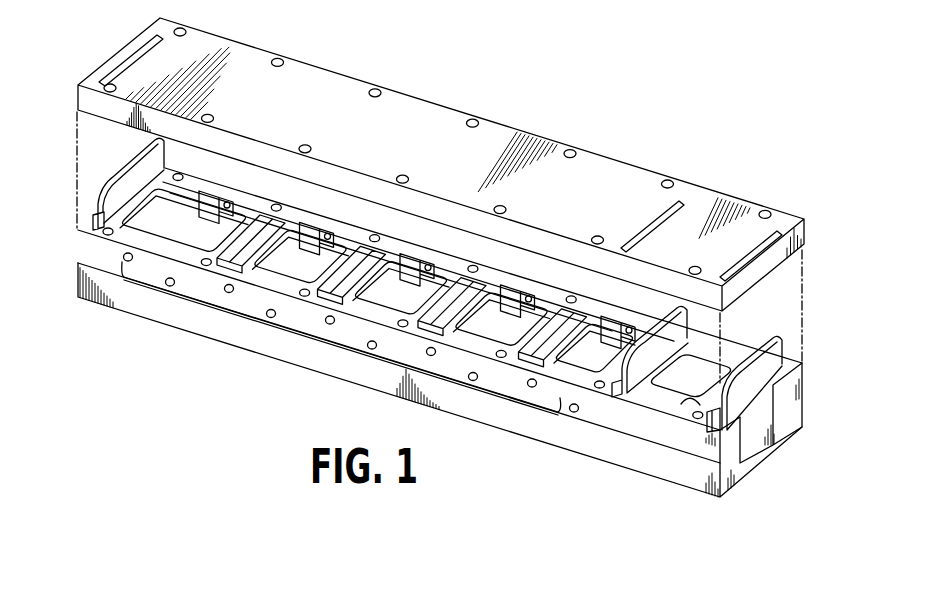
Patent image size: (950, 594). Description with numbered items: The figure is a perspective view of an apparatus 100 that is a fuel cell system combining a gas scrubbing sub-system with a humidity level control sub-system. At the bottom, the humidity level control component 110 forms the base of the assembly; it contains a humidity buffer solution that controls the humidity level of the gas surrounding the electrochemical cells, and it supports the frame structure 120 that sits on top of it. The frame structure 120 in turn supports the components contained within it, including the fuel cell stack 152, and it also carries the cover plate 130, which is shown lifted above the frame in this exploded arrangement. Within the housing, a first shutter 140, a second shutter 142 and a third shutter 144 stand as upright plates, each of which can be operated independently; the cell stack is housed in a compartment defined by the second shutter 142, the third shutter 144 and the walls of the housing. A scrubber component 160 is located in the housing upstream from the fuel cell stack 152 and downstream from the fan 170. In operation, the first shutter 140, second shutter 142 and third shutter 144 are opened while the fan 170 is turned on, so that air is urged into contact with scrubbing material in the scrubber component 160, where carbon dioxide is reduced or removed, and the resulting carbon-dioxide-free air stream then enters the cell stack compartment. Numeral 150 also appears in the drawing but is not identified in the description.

The apparatus 100 is at (703, 131).
The humidity level control component 110 is at (707, 476).
The frame structure 120 is at (792, 392).
The cover plate 130 is at (589, 186).
The first shutter 140 is at (770, 350).
The second shutter 142 is at (612, 377).
The third shutter 144 is at (124, 178).
The wall slot 150 is at (100, 233).
The fuel cell stack 152 is at (318, 338).
The scrubber component 160 is at (680, 387).
The fan 170 is at (688, 404).